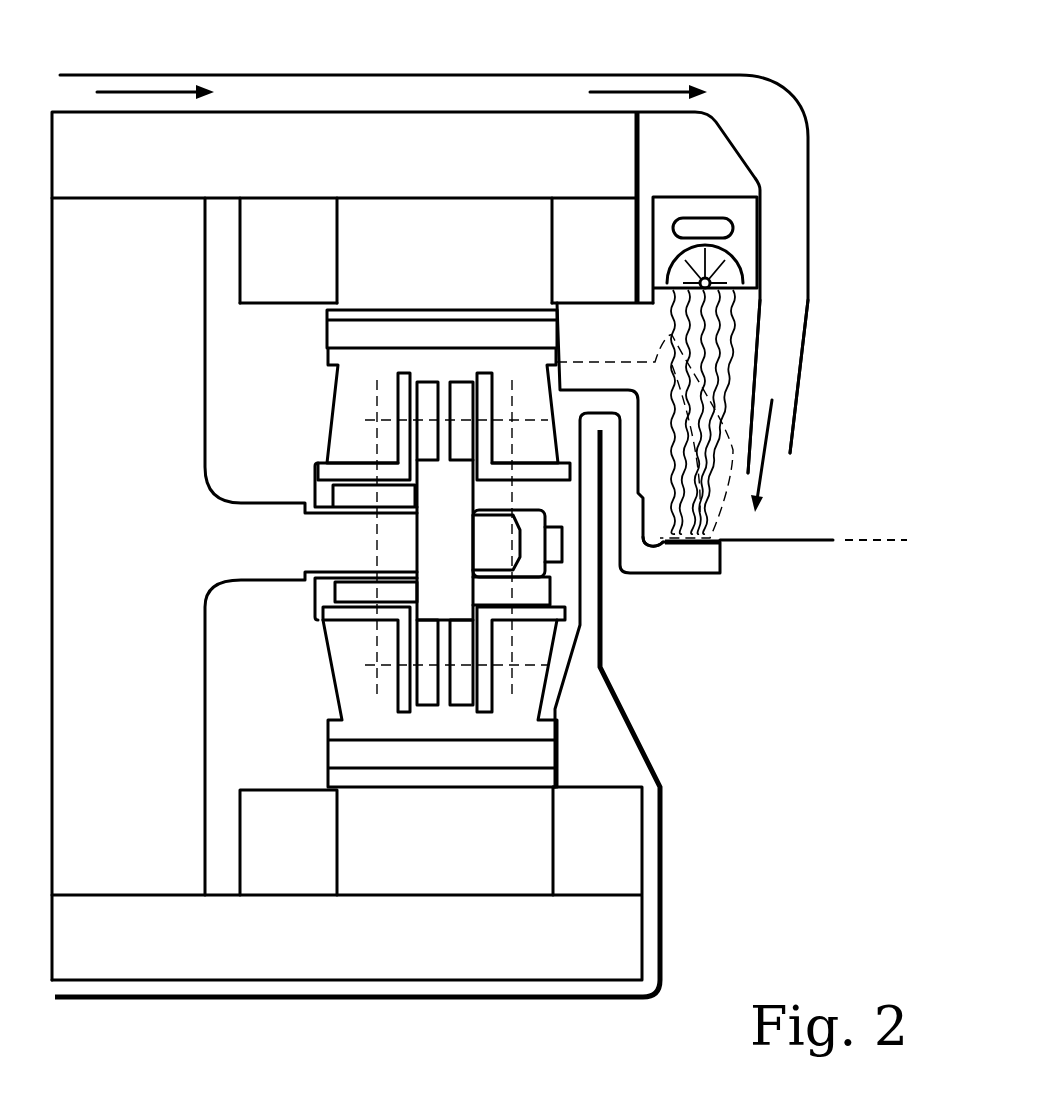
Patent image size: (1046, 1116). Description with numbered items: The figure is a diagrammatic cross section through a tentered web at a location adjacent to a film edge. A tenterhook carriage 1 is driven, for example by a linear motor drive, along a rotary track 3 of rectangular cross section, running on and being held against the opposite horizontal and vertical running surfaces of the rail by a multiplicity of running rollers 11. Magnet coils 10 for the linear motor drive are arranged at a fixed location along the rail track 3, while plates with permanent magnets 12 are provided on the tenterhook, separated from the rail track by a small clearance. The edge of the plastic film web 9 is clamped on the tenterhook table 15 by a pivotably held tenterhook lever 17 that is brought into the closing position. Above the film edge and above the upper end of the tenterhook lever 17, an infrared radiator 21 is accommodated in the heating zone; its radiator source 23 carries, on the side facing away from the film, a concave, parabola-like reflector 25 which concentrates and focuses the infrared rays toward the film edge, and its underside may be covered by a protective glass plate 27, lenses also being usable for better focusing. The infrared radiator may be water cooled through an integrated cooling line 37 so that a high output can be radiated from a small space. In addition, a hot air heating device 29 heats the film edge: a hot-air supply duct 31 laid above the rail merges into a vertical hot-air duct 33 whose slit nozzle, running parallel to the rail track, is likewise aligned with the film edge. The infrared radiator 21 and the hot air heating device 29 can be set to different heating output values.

The tenterhook carriage 1 is at (352, 405).
The rotary track 3 is at (440, 545).
The plastic film web 9 is at (827, 552).
The magnet coils 10 is at (418, 880).
The running rollers 11 is at (466, 397).
The plates with permanent magnets 12 is at (367, 780).
The tenterhook table 15 is at (641, 546).
The tenterhook lever 17 is at (718, 515).
The infrared radiator 21 is at (743, 257).
The radiator source 23 is at (725, 260).
The reflector 25 is at (693, 262).
The glass plate 27 is at (737, 306).
The hot air heating device 29 is at (802, 441).
The hot-air supply duct 31 is at (437, 92).
The vertical hot-air duct 33 is at (780, 343).
The integrated cooling line 37 is at (687, 227).